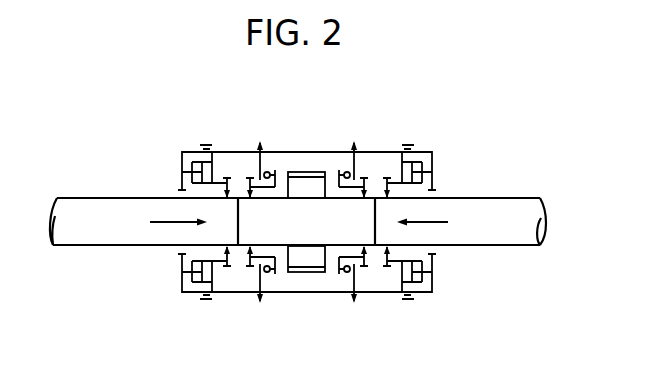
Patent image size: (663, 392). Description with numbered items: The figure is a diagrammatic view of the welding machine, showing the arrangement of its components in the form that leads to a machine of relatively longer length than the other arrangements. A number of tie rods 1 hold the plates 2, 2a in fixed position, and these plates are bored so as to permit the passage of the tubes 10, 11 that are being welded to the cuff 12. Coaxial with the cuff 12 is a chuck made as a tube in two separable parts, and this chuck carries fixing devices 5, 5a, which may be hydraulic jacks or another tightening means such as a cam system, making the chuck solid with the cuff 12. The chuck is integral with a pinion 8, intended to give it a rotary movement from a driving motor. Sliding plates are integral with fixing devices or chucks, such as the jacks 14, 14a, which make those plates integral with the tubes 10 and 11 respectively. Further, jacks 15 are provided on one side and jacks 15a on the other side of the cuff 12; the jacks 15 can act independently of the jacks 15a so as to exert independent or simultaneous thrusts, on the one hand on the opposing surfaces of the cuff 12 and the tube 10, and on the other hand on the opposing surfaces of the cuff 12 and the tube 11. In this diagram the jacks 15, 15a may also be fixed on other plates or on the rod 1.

The tie rod 1 is at (289, 152).
The plate 2 is at (181, 163).
The plate 2a is at (437, 187).
The fixing device 5 is at (250, 177).
The fixing device 5a is at (364, 177).
The pinion 8 is at (307, 171).
The tube 10 is at (141, 237).
The tube 11 is at (503, 236).
The cuff 12 is at (313, 237).
The jack 14 is at (228, 177).
The jack 14a is at (388, 177).
The jack 15 is at (199, 151).
The jack 15a is at (425, 163).